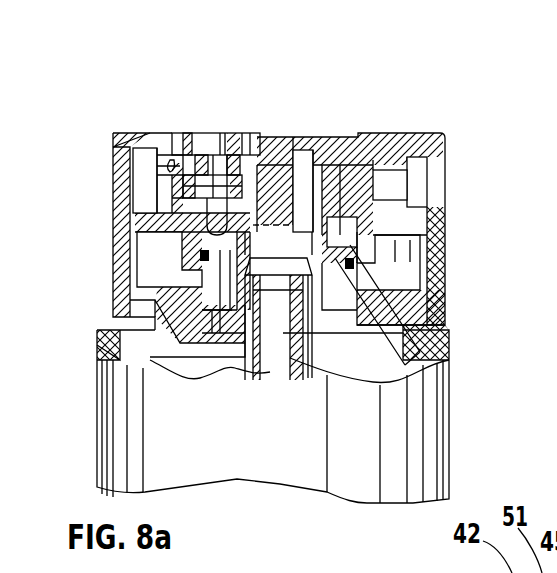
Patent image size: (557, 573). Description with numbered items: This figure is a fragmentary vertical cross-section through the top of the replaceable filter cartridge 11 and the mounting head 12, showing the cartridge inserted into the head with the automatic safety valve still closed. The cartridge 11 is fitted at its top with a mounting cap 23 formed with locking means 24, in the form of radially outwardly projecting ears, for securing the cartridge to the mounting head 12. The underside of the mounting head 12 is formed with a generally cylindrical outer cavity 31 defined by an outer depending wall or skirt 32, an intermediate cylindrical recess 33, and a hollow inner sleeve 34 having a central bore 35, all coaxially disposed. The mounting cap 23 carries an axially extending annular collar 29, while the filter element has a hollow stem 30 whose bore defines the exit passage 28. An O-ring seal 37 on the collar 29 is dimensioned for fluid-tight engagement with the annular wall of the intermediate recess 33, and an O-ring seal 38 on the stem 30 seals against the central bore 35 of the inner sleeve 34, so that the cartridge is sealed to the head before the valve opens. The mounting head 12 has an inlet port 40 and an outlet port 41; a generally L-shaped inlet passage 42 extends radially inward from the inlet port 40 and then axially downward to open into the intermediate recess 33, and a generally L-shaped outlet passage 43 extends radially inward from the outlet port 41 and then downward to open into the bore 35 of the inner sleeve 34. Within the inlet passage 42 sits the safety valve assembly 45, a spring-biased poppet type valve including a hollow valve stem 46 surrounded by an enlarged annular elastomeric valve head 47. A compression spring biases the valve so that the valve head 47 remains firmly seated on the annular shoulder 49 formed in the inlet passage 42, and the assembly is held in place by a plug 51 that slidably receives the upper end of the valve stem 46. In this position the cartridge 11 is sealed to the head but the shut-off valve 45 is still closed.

The filter cartridge 11 is at (455, 457).
The mounting head 12 is at (420, 112).
The mounting cap 23 is at (422, 375).
The locking means 24 is at (440, 330).
The exit passage 28 is at (350, 193).
The annular collar 29 is at (407, 185).
The stem 30 is at (262, 372).
The outer cavity 31 is at (420, 268).
The outer depending wall 32 is at (122, 295).
The intermediate cylindrical recess 33 is at (215, 295).
The inner sleeve 34 is at (300, 200).
The central bore 35 is at (284, 335).
The O-ring seal 37 is at (400, 248).
The O-ring seal 38 is at (254, 332).
The inlet port 40 is at (113, 165).
The outlet port 41 is at (440, 167).
The inlet passage 42 is at (172, 160).
The outlet passage 43 is at (348, 192).
The safety valve assembly 45 is at (235, 73).
The valve stem 46 is at (216, 175).
The valve head 47 is at (228, 172).
The annular shoulder 49 is at (200, 187).
The plug 51 is at (198, 150).